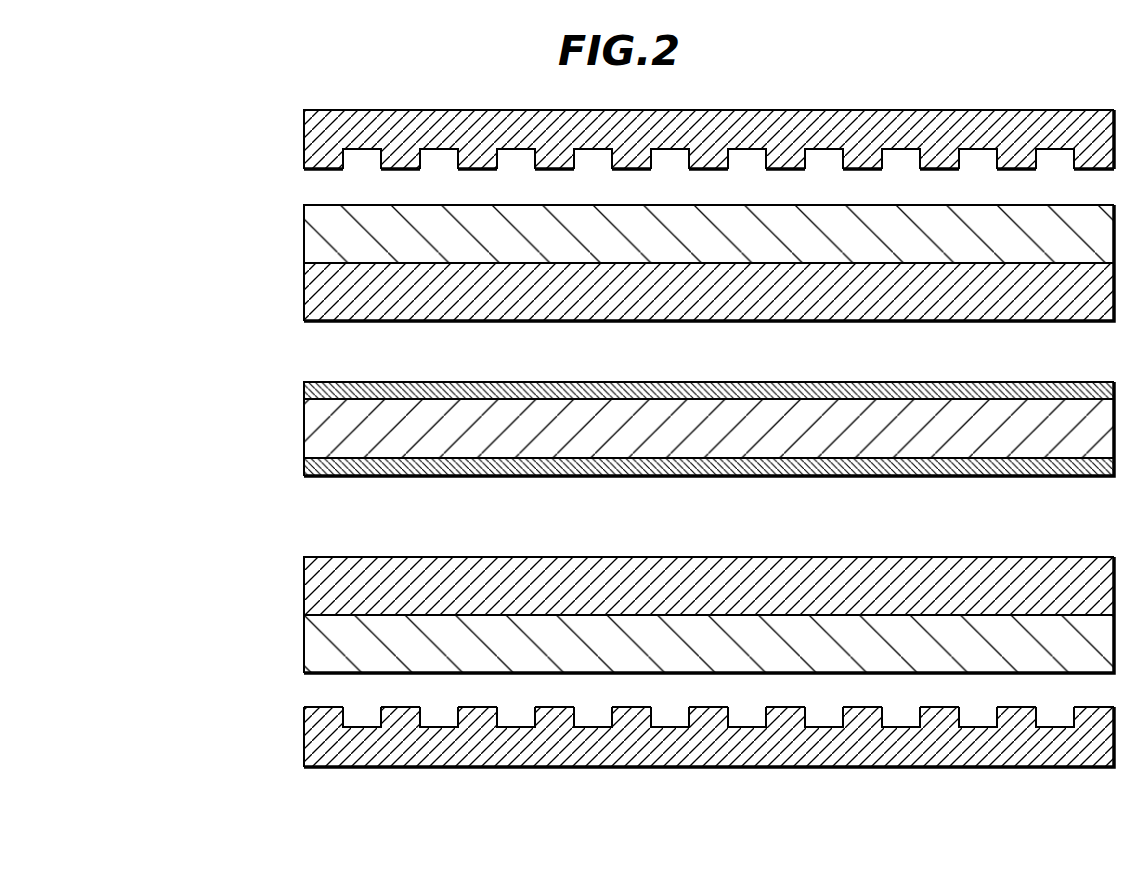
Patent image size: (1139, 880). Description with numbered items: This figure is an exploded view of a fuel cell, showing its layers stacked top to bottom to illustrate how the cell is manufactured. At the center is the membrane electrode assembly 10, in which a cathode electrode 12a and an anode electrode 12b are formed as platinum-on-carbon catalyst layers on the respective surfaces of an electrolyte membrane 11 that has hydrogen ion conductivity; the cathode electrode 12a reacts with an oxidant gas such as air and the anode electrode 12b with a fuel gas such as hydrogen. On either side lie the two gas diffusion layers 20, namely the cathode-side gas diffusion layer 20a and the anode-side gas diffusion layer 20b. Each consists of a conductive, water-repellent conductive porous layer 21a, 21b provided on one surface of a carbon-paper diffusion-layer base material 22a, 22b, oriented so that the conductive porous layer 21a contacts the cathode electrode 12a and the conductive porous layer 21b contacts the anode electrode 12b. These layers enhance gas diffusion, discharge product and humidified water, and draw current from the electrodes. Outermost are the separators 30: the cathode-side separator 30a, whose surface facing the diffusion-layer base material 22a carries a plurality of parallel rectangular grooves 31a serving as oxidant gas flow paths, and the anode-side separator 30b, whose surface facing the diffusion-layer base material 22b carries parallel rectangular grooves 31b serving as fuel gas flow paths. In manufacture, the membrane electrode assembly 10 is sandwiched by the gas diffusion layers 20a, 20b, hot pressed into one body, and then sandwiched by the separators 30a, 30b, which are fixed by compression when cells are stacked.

The membrane electrode assembly 10 is at (648, 428).
The electrolyte membrane 11 is at (312, 431).
The cathode electrode 12a is at (310, 392).
The anode electrode 12b is at (220, 378).
The gas diffusion layers 20 is at (613, 439).
The cathode-side gas diffusion layer 20a is at (613, 263).
The anode-side gas diffusion layer 20b is at (613, 615).
The conductive porous layer 21a is at (313, 296).
The diffusion-layer base material 22a is at (313, 243).
The conductive porous layer 21b is at (320, 592).
The diffusion-layer base material 22b is at (316, 646).
The separators 30 is at (639, 445).
The cathode-side separator 30a is at (309, 138).
The anode-side separator 30b is at (323, 744).
The grooves 31a is at (366, 160).
The grooves 31b is at (361, 718).